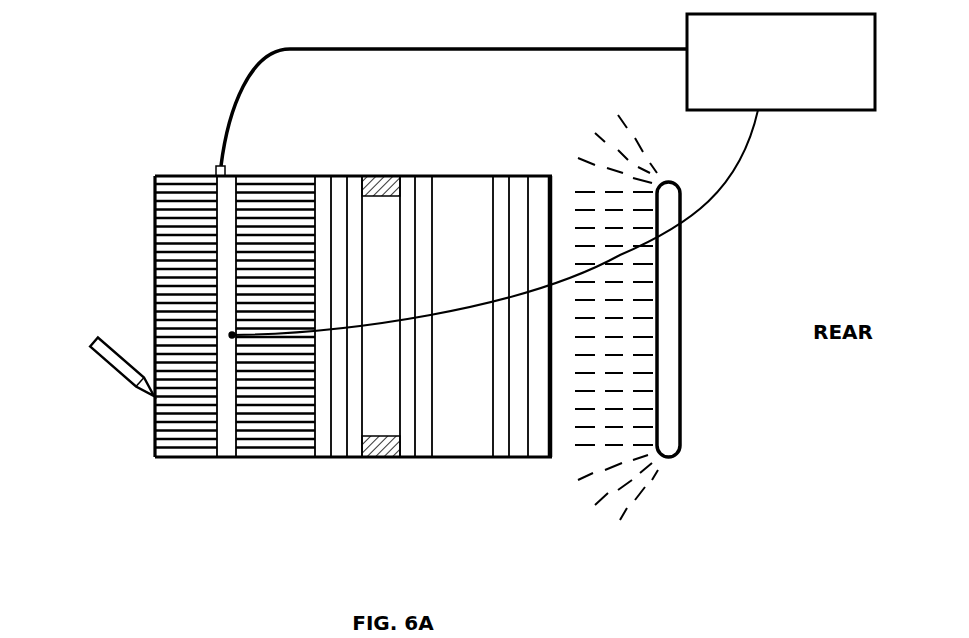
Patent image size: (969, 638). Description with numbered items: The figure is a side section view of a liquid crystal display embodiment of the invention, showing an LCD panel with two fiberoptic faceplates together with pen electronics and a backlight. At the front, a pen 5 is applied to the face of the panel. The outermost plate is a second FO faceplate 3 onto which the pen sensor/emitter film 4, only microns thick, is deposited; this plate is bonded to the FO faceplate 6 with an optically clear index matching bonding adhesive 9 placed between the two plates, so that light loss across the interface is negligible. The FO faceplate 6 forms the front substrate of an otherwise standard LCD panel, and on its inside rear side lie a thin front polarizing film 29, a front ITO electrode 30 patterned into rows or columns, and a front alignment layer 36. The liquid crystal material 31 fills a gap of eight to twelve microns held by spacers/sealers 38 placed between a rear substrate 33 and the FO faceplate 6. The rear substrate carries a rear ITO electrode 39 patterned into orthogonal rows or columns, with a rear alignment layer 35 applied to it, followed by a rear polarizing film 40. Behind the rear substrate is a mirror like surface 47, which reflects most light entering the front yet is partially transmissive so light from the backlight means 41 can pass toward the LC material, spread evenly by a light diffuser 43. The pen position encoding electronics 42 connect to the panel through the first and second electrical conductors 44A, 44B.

The second FO faceplate 3 is at (183, 226).
The pen sensor/emitter film 4 is at (222, 208).
The pen 5 is at (102, 368).
The FO faceplate 6 is at (273, 295).
The index matching bonding adhesive 9 is at (232, 450).
The front polarizing film 29 is at (323, 450).
The front ITO electrode 30 is at (340, 190).
The liquid crystal material 31 is at (382, 387).
The rear substrate 33 is at (462, 190).
The rear alignment layer 35 is at (410, 190).
The front alignment layer 36 is at (355, 450).
The spacers/sealers 38 is at (378, 190).
The rear ITO electrode 39 is at (423, 450).
The rear polarizing film 40 is at (500, 450).
The backlight means 41 is at (668, 350).
The pen position encoding electronics 42 is at (795, 105).
The light diffuser 43 is at (523, 450).
The first electrical conductor 44A is at (317, 48).
The second electrical conductor 44B is at (706, 215).
The mirror like surface 47 is at (540, 190).